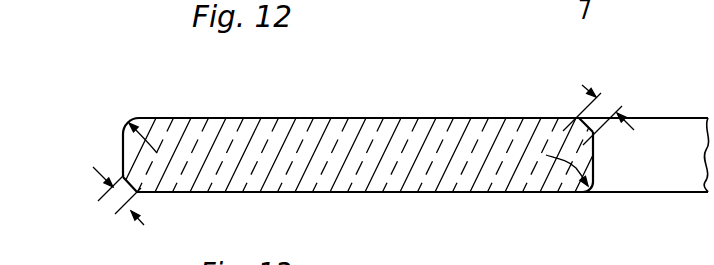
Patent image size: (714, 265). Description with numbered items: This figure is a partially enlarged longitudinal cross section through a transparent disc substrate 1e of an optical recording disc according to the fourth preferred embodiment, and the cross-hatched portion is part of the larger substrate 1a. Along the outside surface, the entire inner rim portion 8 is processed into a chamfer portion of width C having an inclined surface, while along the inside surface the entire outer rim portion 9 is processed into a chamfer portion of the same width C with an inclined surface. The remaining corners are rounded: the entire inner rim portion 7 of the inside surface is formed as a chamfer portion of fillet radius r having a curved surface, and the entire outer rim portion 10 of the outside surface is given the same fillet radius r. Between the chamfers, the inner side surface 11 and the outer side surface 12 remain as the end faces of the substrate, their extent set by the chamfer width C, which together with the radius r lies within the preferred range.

The plate 1a is at (660, 140).
The transparent disc substrate 1e is at (238, 118).
The inner rim portion of the inside surface 7 is at (590, 198).
The inner rim portion of the outside surface 8 is at (585, 118).
The outer rim portion of the inside surface 9 is at (120, 179).
The outer rim portion of the outside surface 10 is at (127, 121).
The inner side surface 11 is at (595, 153).
The outer side surface 12 is at (122, 152).